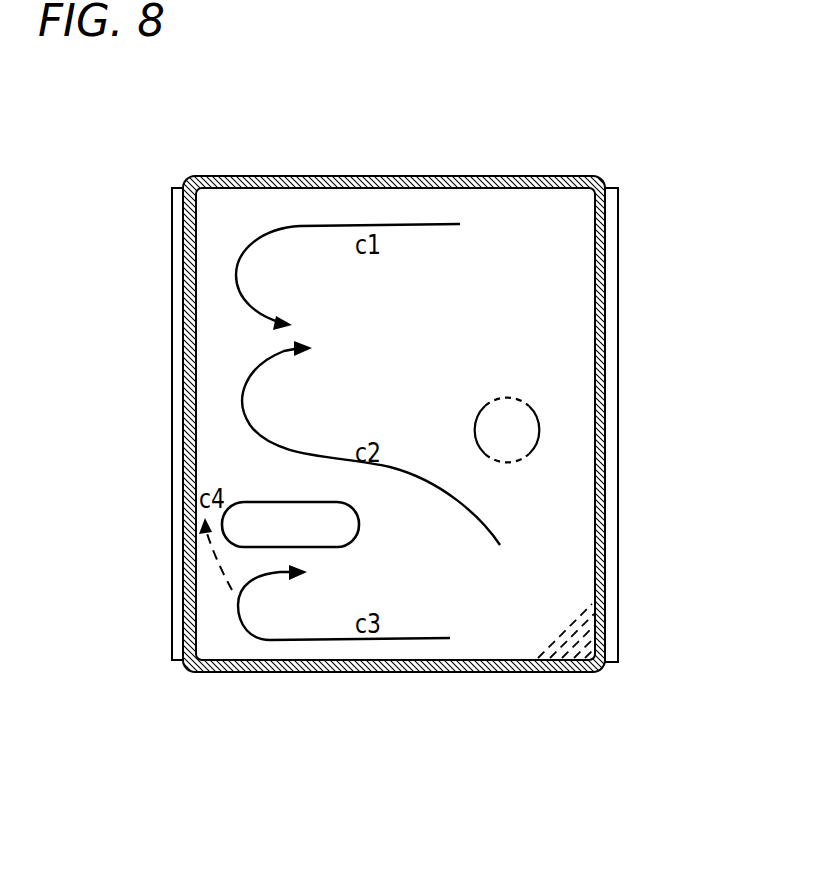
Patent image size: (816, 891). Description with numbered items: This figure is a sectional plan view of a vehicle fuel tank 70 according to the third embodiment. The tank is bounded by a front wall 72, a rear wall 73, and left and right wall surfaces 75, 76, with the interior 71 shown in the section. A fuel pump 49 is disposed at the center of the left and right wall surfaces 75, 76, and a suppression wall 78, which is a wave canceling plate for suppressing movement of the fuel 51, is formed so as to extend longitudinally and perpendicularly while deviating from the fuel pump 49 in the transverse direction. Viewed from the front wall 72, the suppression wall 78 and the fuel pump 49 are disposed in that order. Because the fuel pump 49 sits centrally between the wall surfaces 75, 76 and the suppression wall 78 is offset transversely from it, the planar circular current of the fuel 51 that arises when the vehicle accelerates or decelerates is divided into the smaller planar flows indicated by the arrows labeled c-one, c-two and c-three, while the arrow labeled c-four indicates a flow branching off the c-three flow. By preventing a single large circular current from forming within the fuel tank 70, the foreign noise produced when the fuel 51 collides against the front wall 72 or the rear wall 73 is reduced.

The vehicle fuel tank 70 is at (240, 157).
The interior space of casing 71 is at (423, 204).
The front wall 72 is at (186, 252).
The rear wall 73 is at (604, 268).
The left wall surface 75 is at (352, 673).
The right wall surface 76 is at (350, 177).
The suppression wall 78 is at (254, 502).
The fuel pump 49 is at (503, 397).
The fuel 51 is at (582, 617).